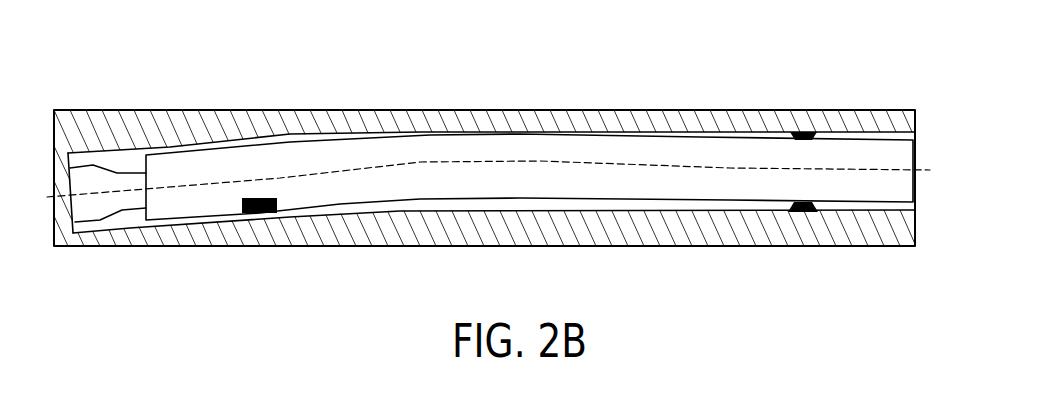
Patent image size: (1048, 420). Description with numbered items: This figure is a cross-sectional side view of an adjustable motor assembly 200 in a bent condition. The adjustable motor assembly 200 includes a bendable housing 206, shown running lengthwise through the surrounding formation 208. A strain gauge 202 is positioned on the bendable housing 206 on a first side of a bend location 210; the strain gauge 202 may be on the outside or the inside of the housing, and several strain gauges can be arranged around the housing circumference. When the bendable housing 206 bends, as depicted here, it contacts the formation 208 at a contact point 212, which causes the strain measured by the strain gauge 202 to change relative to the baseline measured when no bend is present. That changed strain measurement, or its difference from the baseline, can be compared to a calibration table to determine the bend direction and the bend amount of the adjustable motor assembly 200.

The adjustable motor assembly 200 is at (921, 139).
The strain gauge 202 is at (258, 216).
The bendable housing 206 is at (643, 201).
The formation 208 is at (285, 109).
The bend location 210 is at (340, 218).
The contact point 212 is at (453, 131).